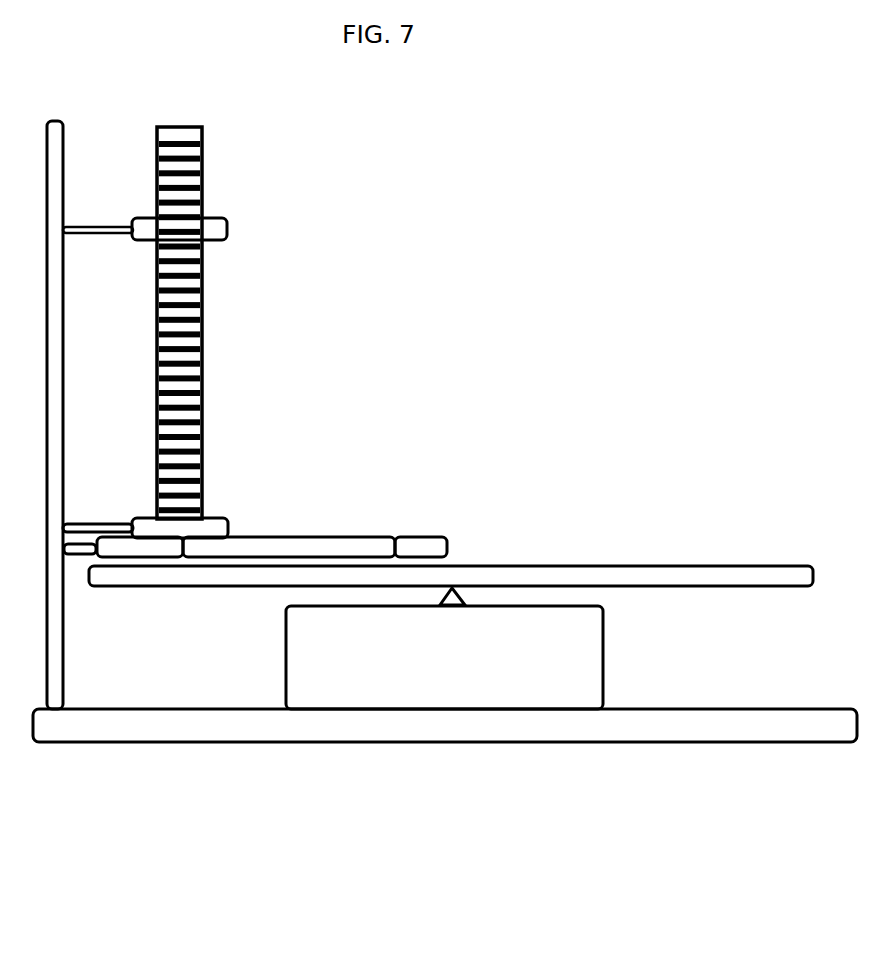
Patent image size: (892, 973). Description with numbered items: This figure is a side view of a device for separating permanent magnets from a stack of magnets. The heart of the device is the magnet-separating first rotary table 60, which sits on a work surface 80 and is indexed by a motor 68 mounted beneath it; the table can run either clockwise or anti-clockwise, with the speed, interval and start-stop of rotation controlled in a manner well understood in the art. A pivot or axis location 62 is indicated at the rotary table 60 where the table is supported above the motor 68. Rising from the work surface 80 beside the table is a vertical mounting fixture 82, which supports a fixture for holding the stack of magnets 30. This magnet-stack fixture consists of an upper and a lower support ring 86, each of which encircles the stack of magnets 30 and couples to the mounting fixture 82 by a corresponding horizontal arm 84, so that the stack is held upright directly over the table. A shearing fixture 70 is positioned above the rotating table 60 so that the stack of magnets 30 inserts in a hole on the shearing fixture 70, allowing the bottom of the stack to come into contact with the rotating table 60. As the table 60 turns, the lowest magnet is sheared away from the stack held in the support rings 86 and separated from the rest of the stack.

The stack of magnets 30 is at (201, 305).
The first rotary table 60 is at (568, 578).
The pivot point 62 is at (504, 564).
The motor 68 is at (562, 664).
The shearing fixture 70 is at (313, 547).
The work surface 80 is at (182, 728).
The mounting fixture 82 is at (55, 163).
The arm 84 is at (93, 228).
The support ring 86 is at (207, 230).